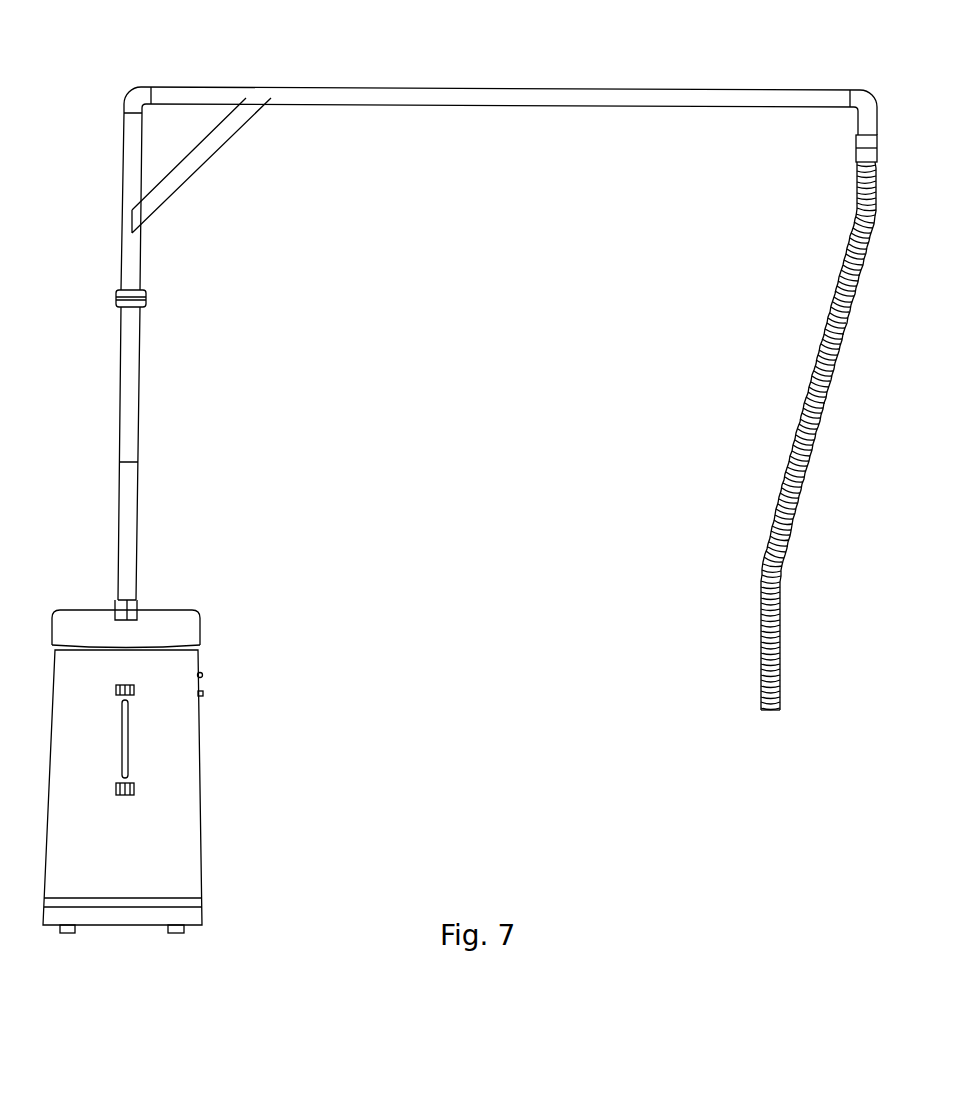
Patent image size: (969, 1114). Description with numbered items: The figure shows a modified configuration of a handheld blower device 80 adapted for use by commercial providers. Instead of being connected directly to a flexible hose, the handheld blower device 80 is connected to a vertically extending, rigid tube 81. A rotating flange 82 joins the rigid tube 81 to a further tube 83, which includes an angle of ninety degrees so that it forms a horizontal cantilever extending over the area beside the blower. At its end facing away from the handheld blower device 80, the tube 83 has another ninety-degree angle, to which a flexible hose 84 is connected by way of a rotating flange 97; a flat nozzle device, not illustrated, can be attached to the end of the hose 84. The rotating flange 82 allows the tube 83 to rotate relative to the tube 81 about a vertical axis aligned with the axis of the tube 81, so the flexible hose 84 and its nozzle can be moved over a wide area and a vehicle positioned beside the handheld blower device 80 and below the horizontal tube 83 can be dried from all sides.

The handheld blower device 80 is at (172, 805).
The tube 81 is at (128, 437).
The rotating flange 82 is at (140, 307).
The tube 83 is at (390, 100).
The hose 84 is at (817, 430).
The rotating flange 97 is at (868, 143).